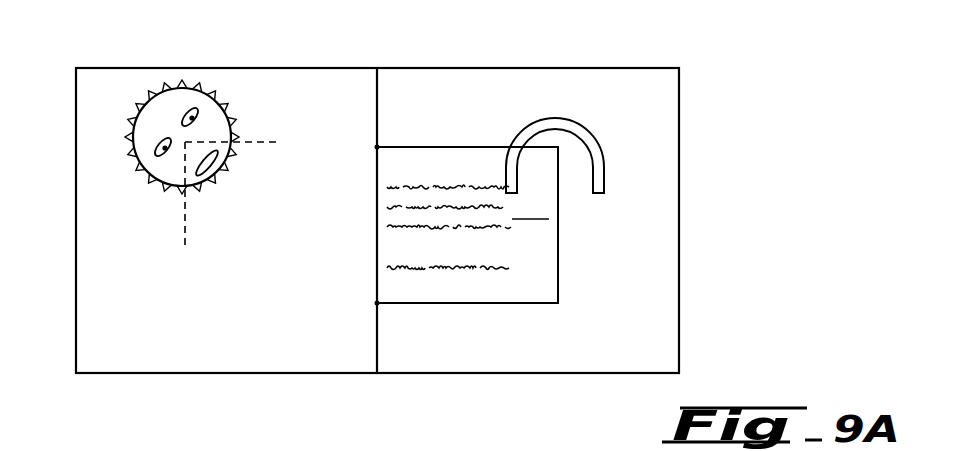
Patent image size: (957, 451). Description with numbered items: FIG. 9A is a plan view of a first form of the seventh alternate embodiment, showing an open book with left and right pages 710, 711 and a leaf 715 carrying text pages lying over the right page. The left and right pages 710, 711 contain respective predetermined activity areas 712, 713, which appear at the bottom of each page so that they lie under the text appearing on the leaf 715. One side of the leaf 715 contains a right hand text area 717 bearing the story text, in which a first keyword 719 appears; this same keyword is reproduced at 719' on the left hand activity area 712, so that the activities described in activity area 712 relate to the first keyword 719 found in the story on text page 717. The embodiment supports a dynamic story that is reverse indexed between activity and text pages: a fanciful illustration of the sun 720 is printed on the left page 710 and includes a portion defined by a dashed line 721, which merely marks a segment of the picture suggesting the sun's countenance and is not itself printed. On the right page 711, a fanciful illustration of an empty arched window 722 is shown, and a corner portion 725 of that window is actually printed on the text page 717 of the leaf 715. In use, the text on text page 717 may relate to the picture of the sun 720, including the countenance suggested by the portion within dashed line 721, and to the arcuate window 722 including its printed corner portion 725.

The left page 710 is at (252, 90).
The right page 711 is at (500, 75).
The left hand activity area 712 is at (153, 323).
The right hand activity area 713 is at (613, 332).
The leaf 715 is at (448, 147).
The right hand text area 717 is at (531, 208).
The first keyword 719 is at (516, 240).
The reproduced first keyword 719' is at (259, 387).
The illustration of the sun 720 is at (128, 190).
The dashed line 721 is at (270, 141).
The illustration of an arched window 722 is at (603, 132).
The corner portion 725 is at (498, 173).